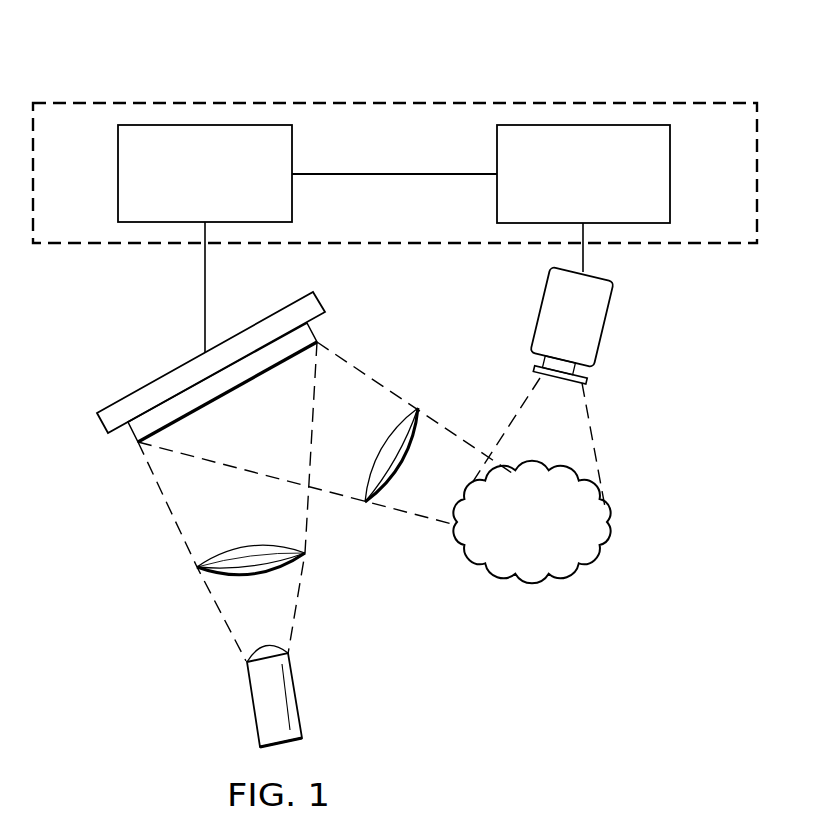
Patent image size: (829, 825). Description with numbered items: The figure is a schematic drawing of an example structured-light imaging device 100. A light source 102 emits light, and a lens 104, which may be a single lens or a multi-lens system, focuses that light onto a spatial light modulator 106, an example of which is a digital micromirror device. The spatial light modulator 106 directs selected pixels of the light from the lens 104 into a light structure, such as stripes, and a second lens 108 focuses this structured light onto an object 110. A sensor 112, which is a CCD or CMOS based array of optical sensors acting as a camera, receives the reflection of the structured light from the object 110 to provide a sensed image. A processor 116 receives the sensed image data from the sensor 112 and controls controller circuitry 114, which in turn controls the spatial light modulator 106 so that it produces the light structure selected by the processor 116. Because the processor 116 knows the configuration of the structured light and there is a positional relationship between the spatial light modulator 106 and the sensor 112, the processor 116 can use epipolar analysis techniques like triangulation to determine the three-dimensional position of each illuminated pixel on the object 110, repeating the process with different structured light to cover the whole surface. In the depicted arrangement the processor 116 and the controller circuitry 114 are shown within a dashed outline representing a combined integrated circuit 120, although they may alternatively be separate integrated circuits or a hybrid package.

The structured-light imaging device 100 is at (162, 61).
The light source 102 is at (249, 705).
The lens 104 is at (197, 570).
The spatial light modulator 106 is at (179, 368).
The lens 108 is at (420, 407).
The object 110 is at (548, 533).
The sensor 112 is at (610, 322).
The controller circuitry 114 is at (118, 164).
The processor 116 is at (670, 163).
The combined integrated circuit 120 is at (471, 102).